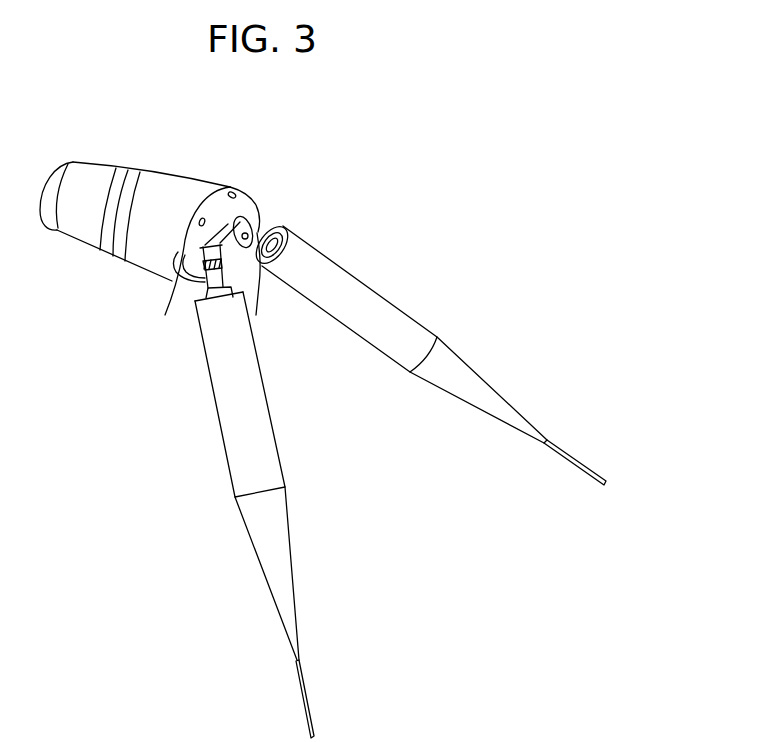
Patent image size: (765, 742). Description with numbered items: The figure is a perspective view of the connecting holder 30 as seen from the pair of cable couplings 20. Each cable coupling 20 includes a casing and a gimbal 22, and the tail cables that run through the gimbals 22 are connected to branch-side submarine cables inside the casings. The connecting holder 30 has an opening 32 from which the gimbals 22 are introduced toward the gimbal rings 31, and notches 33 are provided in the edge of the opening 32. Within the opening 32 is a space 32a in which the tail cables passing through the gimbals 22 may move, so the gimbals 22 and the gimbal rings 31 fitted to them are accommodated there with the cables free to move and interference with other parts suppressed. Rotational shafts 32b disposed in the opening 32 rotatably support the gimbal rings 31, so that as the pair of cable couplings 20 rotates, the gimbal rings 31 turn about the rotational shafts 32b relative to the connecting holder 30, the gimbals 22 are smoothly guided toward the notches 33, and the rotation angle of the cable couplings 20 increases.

The cable coupling 20 is at (375, 272).
The gimbal 22 is at (268, 228).
The connecting holder 30 is at (175, 184).
The gimbal ring 31 is at (250, 212).
The opening 32 is at (244, 217).
The space 32a is at (253, 279).
The rotational shaft 32b is at (202, 218).
The notch 33 is at (170, 274).